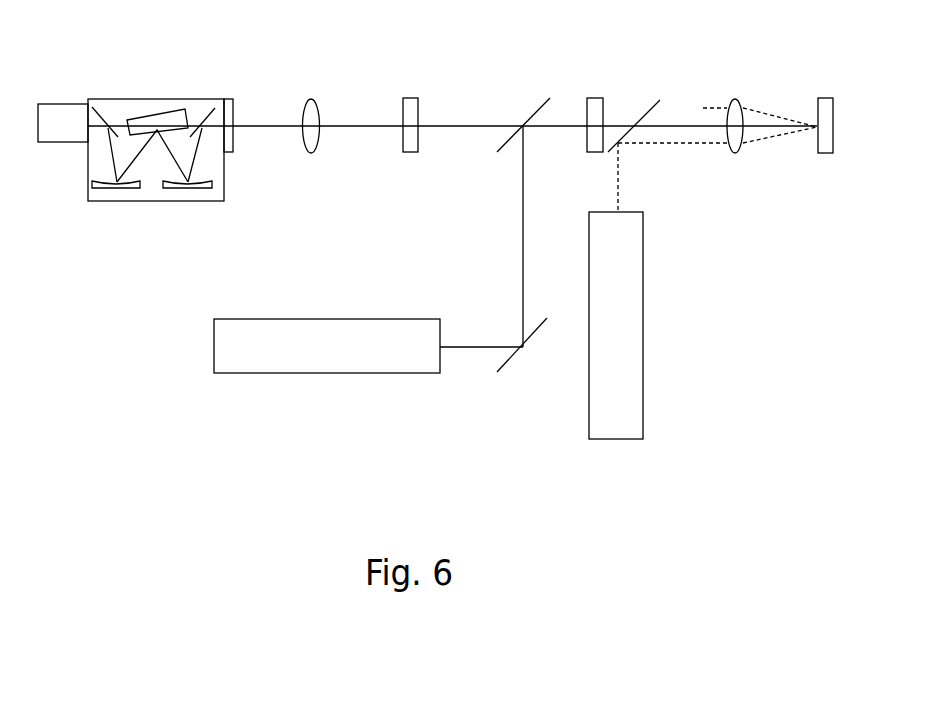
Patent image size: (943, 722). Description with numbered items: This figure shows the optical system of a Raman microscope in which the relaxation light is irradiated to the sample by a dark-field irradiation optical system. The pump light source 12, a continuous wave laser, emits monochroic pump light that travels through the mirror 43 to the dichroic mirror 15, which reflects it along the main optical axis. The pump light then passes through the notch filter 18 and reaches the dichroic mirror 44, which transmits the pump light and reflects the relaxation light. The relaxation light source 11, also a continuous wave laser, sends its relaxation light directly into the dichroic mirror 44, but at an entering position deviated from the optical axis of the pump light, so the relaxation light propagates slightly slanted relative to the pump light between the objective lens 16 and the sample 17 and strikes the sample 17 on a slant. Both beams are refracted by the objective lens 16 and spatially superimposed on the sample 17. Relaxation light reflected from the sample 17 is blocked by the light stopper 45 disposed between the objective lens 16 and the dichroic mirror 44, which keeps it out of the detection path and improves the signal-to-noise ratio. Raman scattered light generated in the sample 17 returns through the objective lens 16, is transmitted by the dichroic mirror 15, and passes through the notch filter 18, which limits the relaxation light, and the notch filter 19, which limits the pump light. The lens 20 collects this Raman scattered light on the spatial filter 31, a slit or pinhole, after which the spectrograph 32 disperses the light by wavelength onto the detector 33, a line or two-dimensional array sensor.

The relaxation light source 11 is at (643, 320).
The pump light source 12 is at (328, 319).
The dichroic mirror 15 is at (535, 110).
The objective lens 16 is at (743, 97).
The sample 17 is at (827, 98).
The notch filter 18 is at (598, 98).
The notch filter 19 is at (413, 98).
The lens 20 is at (312, 98).
The spatial filter 31 is at (231, 98).
The spectrograph 32 is at (153, 98).
The detector 33 is at (67, 104).
The mirror 43 is at (518, 352).
The dichroic mirror 44 is at (658, 107).
The light stopper 45 is at (702, 115).